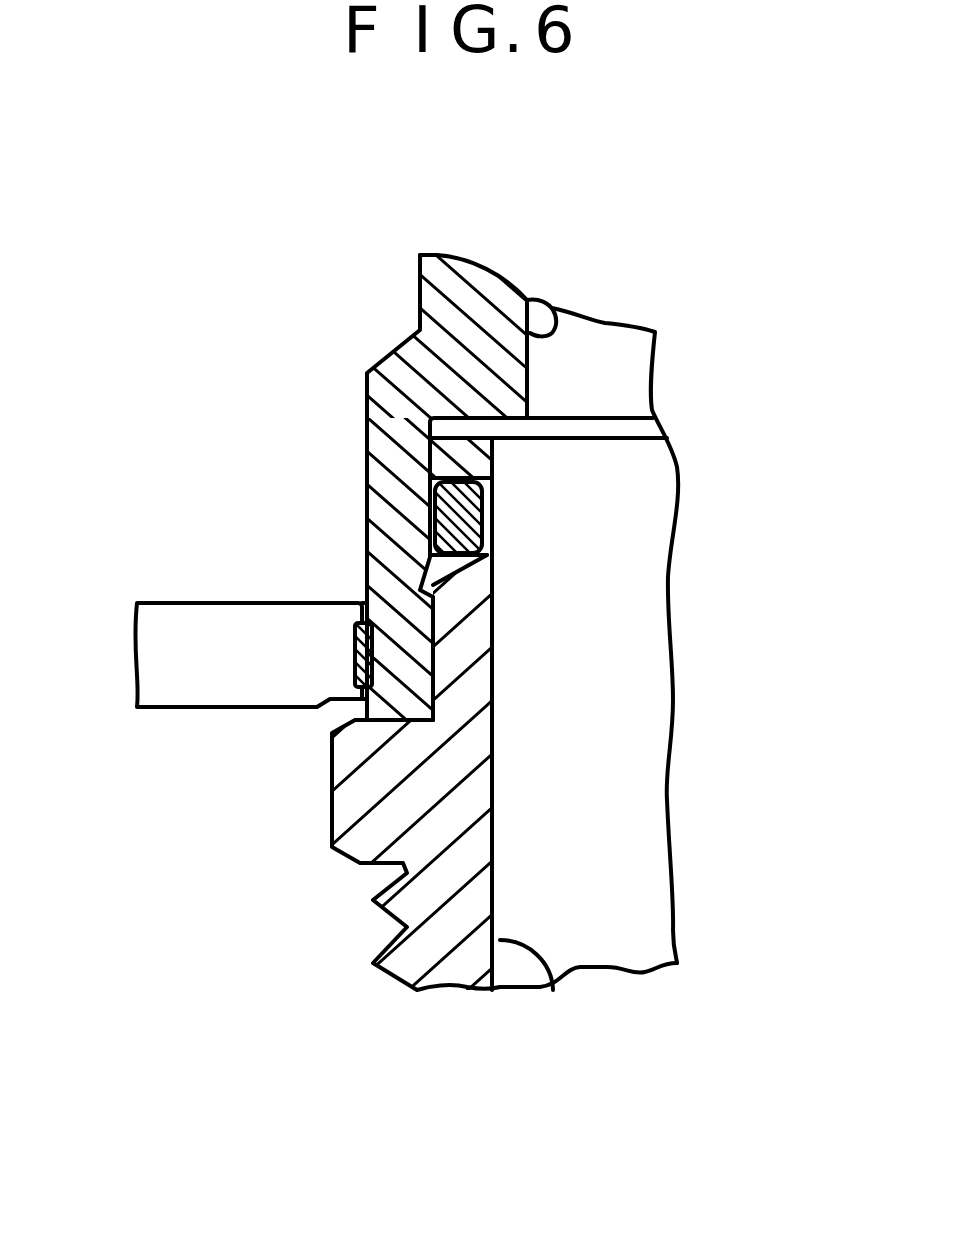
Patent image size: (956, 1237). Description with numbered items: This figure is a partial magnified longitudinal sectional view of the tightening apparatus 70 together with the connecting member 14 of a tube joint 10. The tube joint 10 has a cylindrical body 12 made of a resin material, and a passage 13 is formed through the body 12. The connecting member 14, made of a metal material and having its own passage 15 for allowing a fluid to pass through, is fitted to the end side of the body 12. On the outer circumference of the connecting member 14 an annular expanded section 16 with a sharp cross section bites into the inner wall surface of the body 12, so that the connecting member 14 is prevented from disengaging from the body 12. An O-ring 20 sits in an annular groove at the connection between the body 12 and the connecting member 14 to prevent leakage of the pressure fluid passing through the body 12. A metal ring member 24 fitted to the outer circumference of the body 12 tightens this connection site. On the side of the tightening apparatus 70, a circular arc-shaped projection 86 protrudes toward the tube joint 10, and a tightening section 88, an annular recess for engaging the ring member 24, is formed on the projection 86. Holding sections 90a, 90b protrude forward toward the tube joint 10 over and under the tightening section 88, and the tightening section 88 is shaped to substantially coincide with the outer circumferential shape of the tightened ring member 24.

The tube joint 10 is at (612, 218).
The body 12 is at (400, 264).
The passage 13 is at (545, 314).
The connecting member 14 is at (483, 837).
The passage 15 is at (550, 976).
The annular expanded section 16 is at (432, 590).
The O-ring 20 is at (487, 497).
The ring member 24 is at (372, 663).
The pressing tool 70 is at (224, 534).
The circular arc-shaped projection 86 is at (207, 622).
The tightening section 88 is at (353, 650).
The holding section 90a is at (353, 597).
The holding section 90b is at (350, 698).